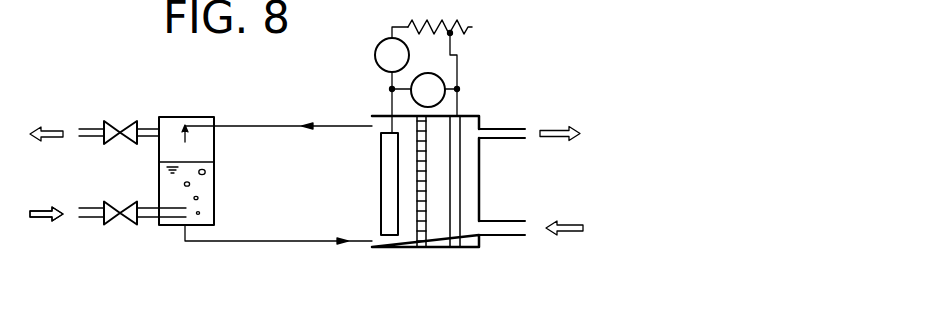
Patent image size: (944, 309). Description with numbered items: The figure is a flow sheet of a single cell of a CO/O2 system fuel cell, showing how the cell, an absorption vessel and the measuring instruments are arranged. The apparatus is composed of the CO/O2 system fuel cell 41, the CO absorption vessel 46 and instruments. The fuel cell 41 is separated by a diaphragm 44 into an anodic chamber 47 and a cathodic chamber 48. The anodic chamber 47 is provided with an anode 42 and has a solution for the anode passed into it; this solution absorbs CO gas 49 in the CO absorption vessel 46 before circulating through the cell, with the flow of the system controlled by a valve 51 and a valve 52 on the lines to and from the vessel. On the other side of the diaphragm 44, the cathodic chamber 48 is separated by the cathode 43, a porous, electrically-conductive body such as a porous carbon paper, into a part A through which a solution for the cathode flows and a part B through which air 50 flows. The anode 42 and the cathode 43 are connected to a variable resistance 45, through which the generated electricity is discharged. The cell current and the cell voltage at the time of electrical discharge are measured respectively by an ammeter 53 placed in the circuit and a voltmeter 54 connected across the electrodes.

The CO/O2 system fuel cell 41 is at (404, 254).
The anode 42 is at (381, 160).
The cathode 43 is at (455, 129).
The diaphragm 44 is at (421, 249).
The variable resistance 45 is at (472, 27).
The CO absorption vessel 46 is at (175, 226).
The anodic chamber 47 is at (376, 244).
The cathodic chamber 48 is at (441, 247).
The CO gas 49 is at (50, 221).
The air 50 is at (567, 236).
The valve 51 is at (119, 226).
The valve 52 is at (113, 121).
The ammeter 53 is at (375, 52).
The voltmeter 54 is at (443, 81).
The part A is at (473, 179).
The part B is at (440, 210).